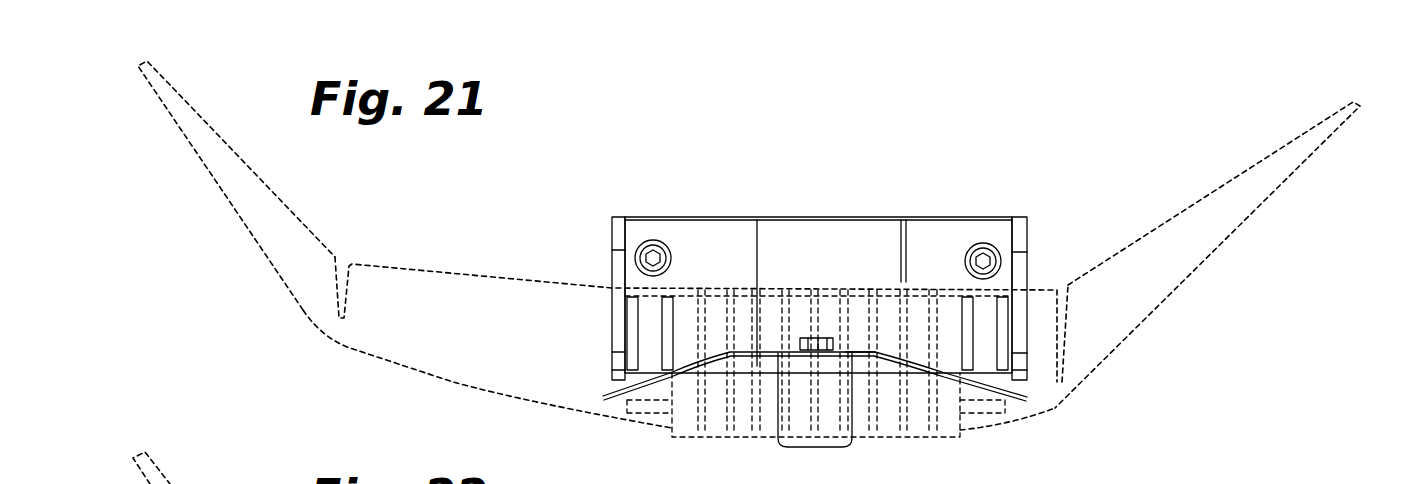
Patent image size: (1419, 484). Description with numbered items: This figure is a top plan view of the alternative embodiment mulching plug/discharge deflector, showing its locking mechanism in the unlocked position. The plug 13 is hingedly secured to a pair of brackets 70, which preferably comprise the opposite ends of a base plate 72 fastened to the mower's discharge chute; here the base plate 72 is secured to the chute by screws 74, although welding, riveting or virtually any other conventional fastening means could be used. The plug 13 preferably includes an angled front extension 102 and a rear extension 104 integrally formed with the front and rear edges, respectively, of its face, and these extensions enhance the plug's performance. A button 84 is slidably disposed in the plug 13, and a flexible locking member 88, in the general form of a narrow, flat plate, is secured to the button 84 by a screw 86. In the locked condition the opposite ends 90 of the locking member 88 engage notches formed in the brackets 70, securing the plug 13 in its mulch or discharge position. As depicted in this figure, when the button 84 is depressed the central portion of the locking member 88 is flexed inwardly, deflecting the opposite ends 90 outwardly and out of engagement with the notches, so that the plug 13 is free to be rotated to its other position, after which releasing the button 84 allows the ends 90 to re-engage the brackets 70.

The plug 13 is at (447, 384).
The rear extension 104 is at (226, 180).
The front extension 102 is at (1227, 222).
The brackets 70 is at (612, 232).
The base plate 72 is at (830, 247).
The screws 74 is at (672, 254).
The button 84 is at (836, 442).
The screw 86 is at (827, 338).
The flexible locking member 88 is at (858, 349).
The opposite ends 90 is at (606, 396).